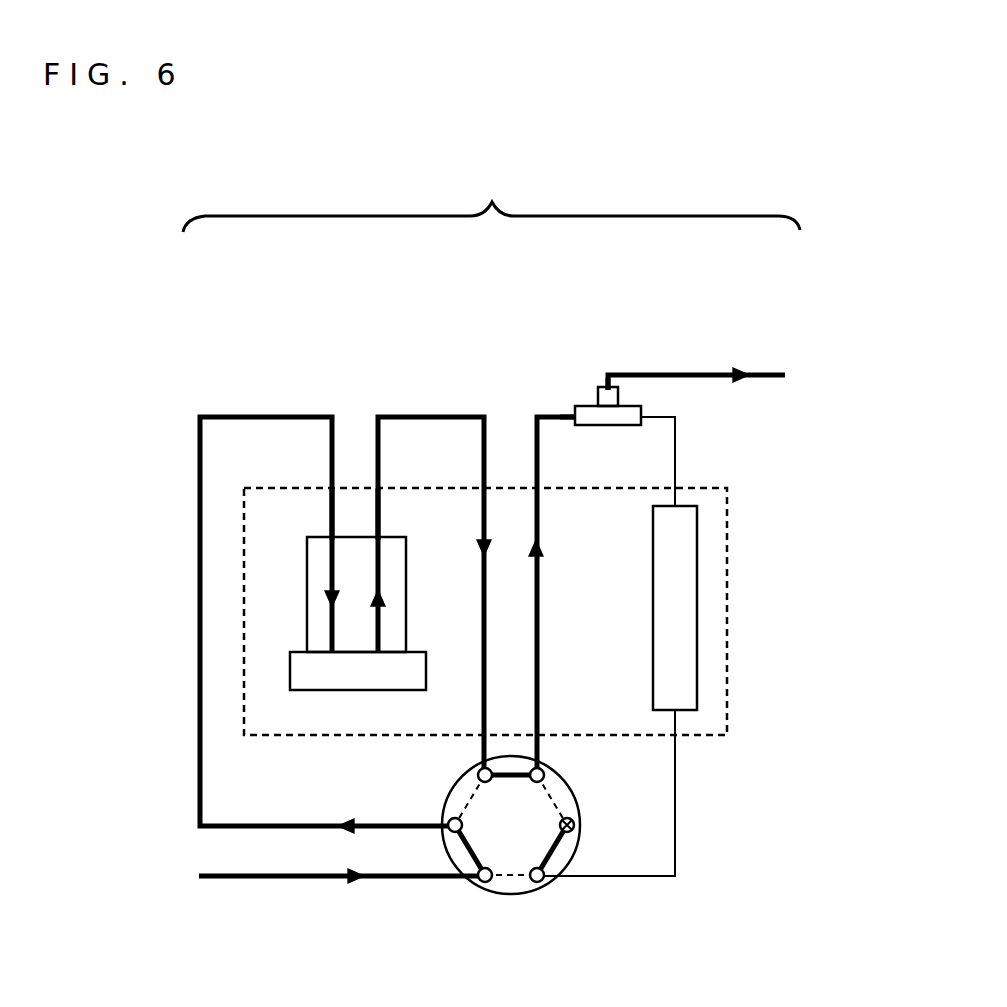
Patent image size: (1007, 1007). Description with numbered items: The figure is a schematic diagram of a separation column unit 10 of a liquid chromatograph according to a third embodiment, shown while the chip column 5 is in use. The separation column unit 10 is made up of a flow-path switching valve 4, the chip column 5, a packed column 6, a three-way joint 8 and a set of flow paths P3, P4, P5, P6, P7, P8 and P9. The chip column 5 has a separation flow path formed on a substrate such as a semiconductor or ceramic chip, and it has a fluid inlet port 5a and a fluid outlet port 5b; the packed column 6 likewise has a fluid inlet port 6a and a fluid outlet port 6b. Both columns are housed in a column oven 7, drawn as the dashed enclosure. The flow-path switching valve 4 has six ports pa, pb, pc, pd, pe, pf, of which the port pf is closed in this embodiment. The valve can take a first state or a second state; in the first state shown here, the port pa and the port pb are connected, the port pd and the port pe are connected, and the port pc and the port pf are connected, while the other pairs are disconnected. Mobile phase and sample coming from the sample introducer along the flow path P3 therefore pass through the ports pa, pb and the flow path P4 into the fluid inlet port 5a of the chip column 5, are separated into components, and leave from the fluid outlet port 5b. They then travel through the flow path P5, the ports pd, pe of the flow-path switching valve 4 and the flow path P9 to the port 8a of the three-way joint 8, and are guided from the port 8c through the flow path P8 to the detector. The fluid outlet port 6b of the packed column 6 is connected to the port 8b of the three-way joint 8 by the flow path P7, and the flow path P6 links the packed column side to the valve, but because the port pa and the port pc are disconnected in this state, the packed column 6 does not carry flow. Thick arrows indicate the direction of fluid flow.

The separation column unit 10 is at (491, 195).
The flow-path switching valve 4 is at (508, 865).
The port pa is at (481, 883).
The port pb is at (448, 815).
The port pc is at (541, 883).
The port pd is at (479, 767).
The port pe is at (543, 768).
The port pf is at (576, 816).
The chip column 5 is at (351, 589).
The fluid inlet port 5a is at (332, 535).
The fluid outlet port 5b is at (378, 535).
The packed column 6 is at (713, 622).
The fluid inlet port 6a is at (676, 712).
The fluid outlet port 6b is at (676, 506).
The column oven 7 is at (728, 586).
The three-way joint 8 is at (595, 353).
The port 8a is at (575, 412).
The port 8b is at (643, 417).
The port 8c is at (605, 387).
The flow path P3 is at (255, 878).
The flow path P4 is at (255, 824).
The flow path P5 is at (380, 478).
The flow path P6 is at (677, 838).
The flow path P7 is at (677, 480).
The flow path P8 is at (673, 375).
The flow path P9 is at (538, 633).